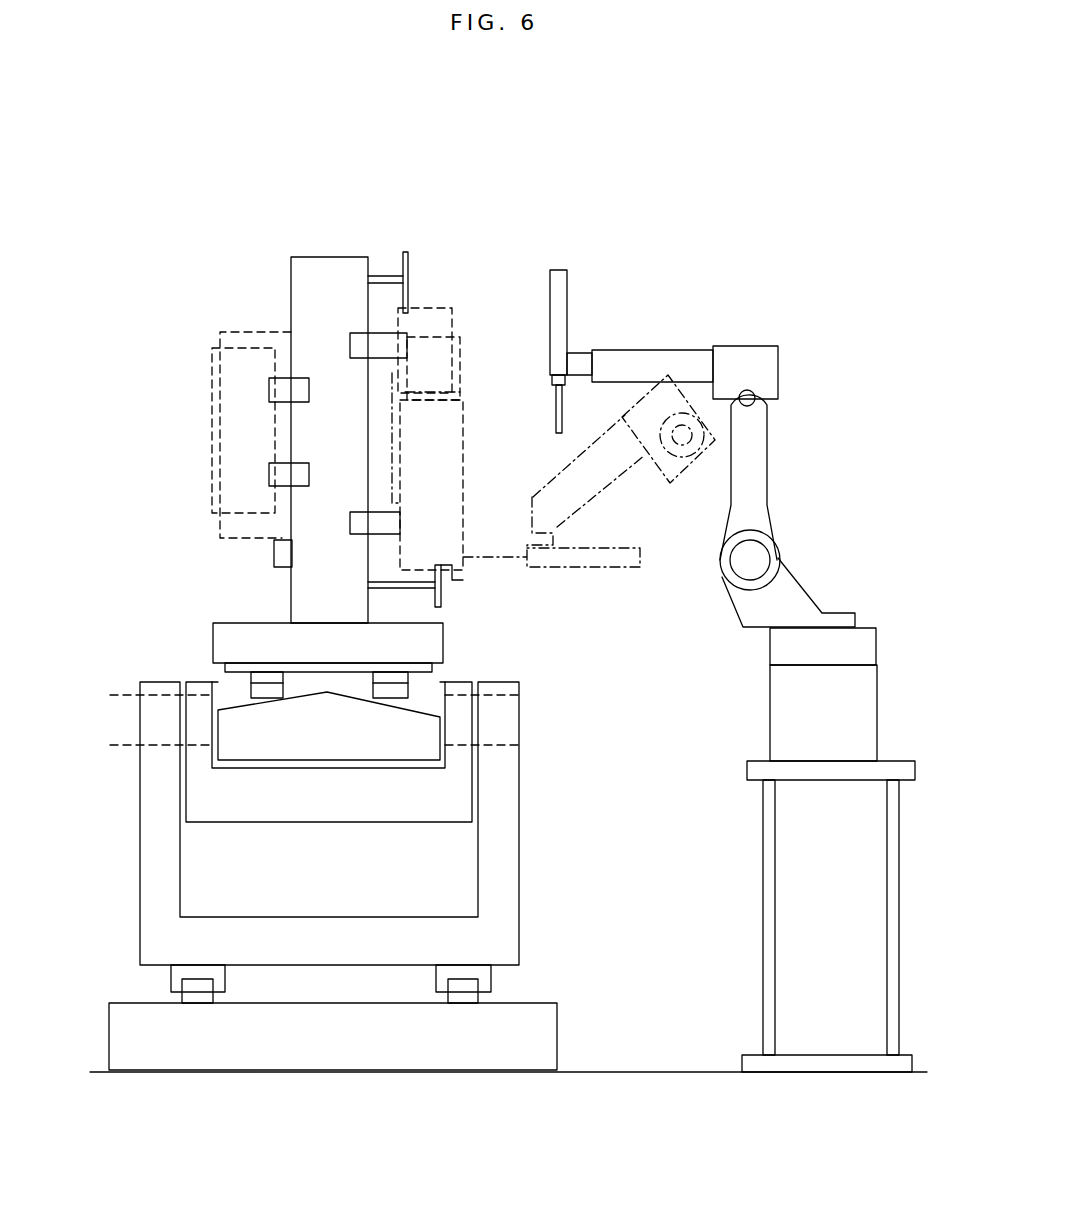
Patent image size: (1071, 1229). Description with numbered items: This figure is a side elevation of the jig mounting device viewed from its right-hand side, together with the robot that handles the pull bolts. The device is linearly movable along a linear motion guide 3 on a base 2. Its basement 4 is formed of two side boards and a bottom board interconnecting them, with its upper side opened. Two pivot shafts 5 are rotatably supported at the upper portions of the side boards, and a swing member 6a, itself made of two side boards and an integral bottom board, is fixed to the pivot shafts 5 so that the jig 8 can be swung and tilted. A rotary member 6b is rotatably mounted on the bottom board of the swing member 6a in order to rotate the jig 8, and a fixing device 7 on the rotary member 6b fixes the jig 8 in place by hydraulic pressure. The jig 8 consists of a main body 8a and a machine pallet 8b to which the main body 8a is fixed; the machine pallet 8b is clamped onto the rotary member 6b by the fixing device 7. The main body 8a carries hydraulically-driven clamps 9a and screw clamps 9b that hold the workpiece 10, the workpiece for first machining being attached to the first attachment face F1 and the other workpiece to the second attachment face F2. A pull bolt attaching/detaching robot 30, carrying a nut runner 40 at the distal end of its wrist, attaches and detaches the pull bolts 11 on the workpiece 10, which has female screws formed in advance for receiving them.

The base 2 is at (550, 1030).
The linear motion guide 3 is at (473, 993).
The basement 4 is at (510, 897).
The pivot shafts 5 is at (125, 747).
The swing member 6a is at (463, 807).
The rotary member 6b is at (420, 720).
The fixing device 7 is at (405, 698).
The jig 8 is at (308, 243).
The main body 8a is at (330, 270).
The machine pallet 8b is at (228, 625).
The hydraulically-driven clamps 9a is at (407, 268).
The screw clamps 9b is at (270, 392).
The workpiece 10 is at (228, 446).
The pull bolt 11 is at (557, 440).
The pull bolt attaching/detaching robot 30 is at (725, 318).
The nut runner 40 is at (540, 341).
The first attachment face F1 is at (370, 268).
The second attachment face F2 is at (291, 296).